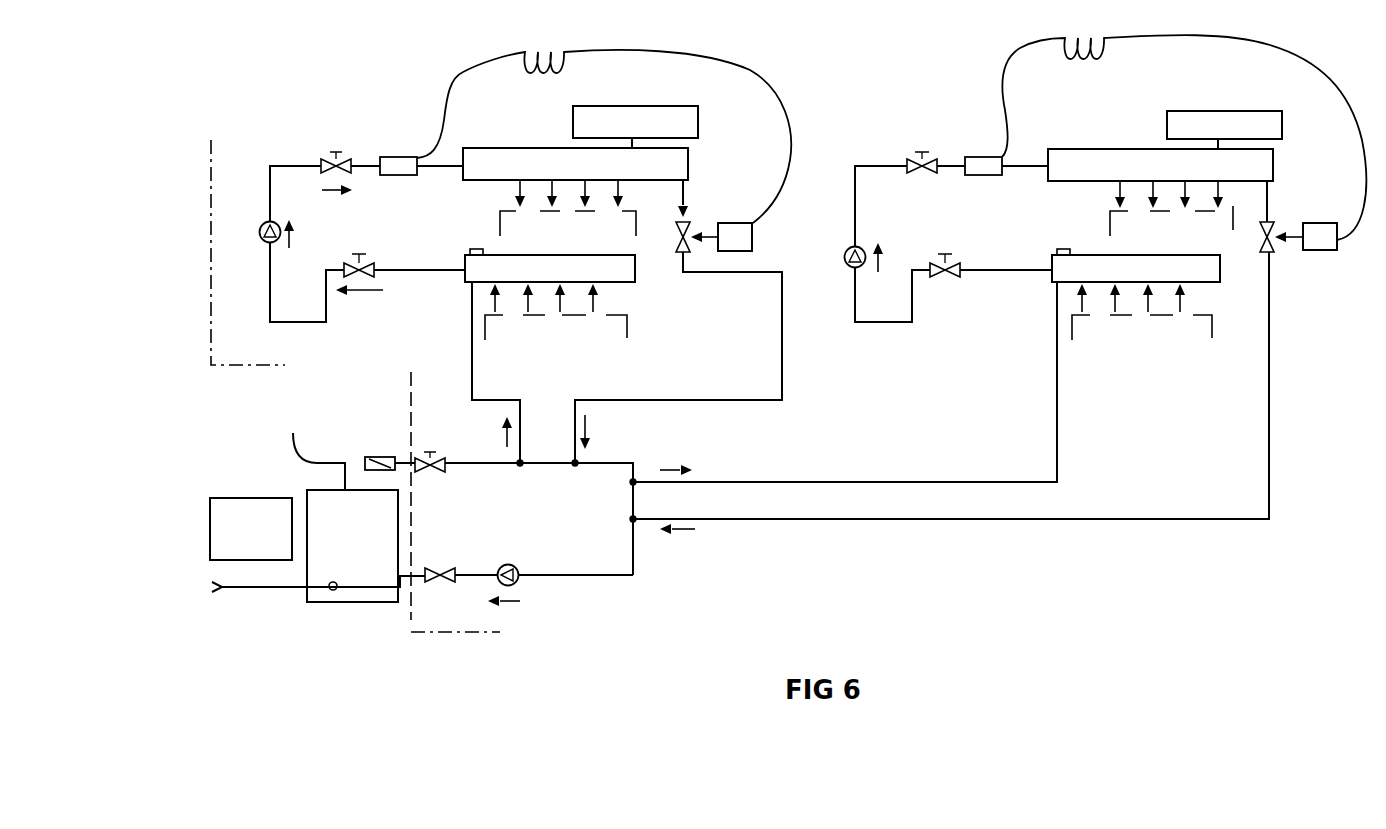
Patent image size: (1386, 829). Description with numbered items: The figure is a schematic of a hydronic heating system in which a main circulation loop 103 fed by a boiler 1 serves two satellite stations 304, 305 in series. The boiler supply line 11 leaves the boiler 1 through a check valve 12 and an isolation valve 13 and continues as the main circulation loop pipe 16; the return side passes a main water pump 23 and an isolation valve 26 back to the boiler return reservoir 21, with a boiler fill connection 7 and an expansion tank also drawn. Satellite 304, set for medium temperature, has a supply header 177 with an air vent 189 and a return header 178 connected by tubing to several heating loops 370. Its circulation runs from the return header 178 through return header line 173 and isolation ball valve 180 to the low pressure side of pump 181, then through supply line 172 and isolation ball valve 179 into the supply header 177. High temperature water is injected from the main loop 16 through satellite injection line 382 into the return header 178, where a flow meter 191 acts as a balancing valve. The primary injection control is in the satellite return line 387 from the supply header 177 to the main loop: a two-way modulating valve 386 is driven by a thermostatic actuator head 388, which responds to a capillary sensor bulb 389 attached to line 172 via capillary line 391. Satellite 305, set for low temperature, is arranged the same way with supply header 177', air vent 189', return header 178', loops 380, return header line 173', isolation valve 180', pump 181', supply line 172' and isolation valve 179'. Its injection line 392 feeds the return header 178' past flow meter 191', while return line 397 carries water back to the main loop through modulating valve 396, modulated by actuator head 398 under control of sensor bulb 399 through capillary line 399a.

The boiler 1 is at (340, 603).
The boiler fill line 7 is at (248, 590).
The boiler supply line 11 is at (313, 451).
The check valve 12 is at (375, 457).
The isolation valve 13 is at (425, 446).
The main circulation loop pipe 16 is at (553, 573).
The boiler return reservoir 21 is at (333, 582).
The main water pump 23 is at (500, 563).
The isolation valve 26 is at (440, 566).
The main circulation loop 103 is at (583, 607).
The supply line 172 is at (341, 194).
The return header line 173 is at (517, 285).
The supply header 177 is at (575, 180).
The return header 178 is at (367, 282).
The isolation ball valve 179 is at (310, 150).
The isolation ball valve 180 is at (362, 240).
The pump 181 is at (258, 252).
The air vent 189 is at (635, 105).
The flow meter 191 is at (481, 229).
The satellite distribution station 304 is at (338, 108).
The satellite distribution station 305 is at (920, 62).
The loops 370 is at (660, 292).
The loops 380 is at (1127, 386).
The satellite injection line 382 is at (487, 400).
The two-way modulating valve 386 is at (688, 231).
The satellite return line 387 is at (705, 400).
The thermostatic actuator head 388 is at (752, 239).
The capillary sensor bulb 389 is at (403, 157).
The capillary line 391 is at (463, 72).
The satellite injection line 392 is at (785, 482).
The two-way modulating valve 396 is at (1275, 252).
The satellite return line 397 is at (777, 520).
The thermostatic actuator head 398 is at (1320, 223).
The capillary sensor bulb 399 is at (984, 157).
The capillary line 399a is at (1098, 60).
The supply line 172' is at (922, 206).
The return header line 173' is at (1104, 286).
The supply header 177' is at (1158, 179).
The return header 178' is at (953, 300).
The isolation valve 179' is at (918, 139).
The isolation valve 180' is at (946, 241).
The pump 181' is at (840, 274).
The air vent 189' is at (1224, 106).
The flow meter 191' is at (1071, 229).